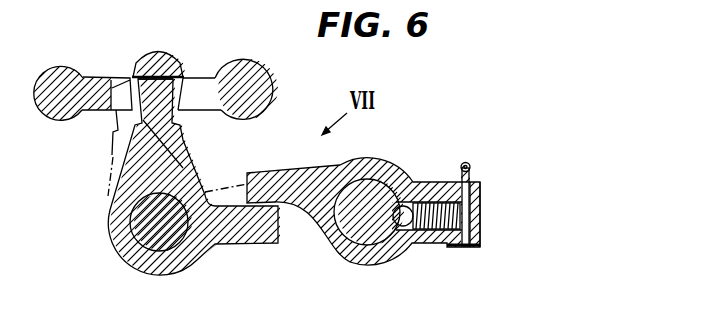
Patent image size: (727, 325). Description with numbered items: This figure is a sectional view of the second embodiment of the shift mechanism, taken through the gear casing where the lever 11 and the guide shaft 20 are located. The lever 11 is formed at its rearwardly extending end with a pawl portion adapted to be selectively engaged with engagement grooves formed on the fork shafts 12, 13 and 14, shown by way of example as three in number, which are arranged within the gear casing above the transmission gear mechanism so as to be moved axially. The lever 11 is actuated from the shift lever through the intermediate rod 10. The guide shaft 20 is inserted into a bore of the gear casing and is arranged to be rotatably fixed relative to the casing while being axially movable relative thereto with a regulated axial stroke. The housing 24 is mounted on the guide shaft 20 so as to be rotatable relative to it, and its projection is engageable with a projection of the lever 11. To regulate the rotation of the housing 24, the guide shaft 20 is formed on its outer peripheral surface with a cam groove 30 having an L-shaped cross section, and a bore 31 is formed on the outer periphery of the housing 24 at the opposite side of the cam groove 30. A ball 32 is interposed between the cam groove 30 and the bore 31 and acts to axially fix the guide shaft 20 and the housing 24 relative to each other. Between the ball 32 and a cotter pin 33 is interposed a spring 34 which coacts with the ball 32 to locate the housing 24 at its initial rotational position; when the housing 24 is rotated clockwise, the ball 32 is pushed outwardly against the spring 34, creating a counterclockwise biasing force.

The intermediate rod 10 is at (158, 243).
The lever 11 is at (121, 242).
The fork shaft 12 is at (247, 66).
The fork shaft 13 is at (157, 50).
The fork shaft 14 is at (60, 68).
The guide shaft 20 is at (370, 181).
The housing 24 is at (363, 162).
The cam groove 30 is at (397, 262).
The bore 31 is at (481, 212).
The ball 32 is at (414, 206).
The cotter pin 33 is at (469, 164).
The spring 34 is at (437, 233).